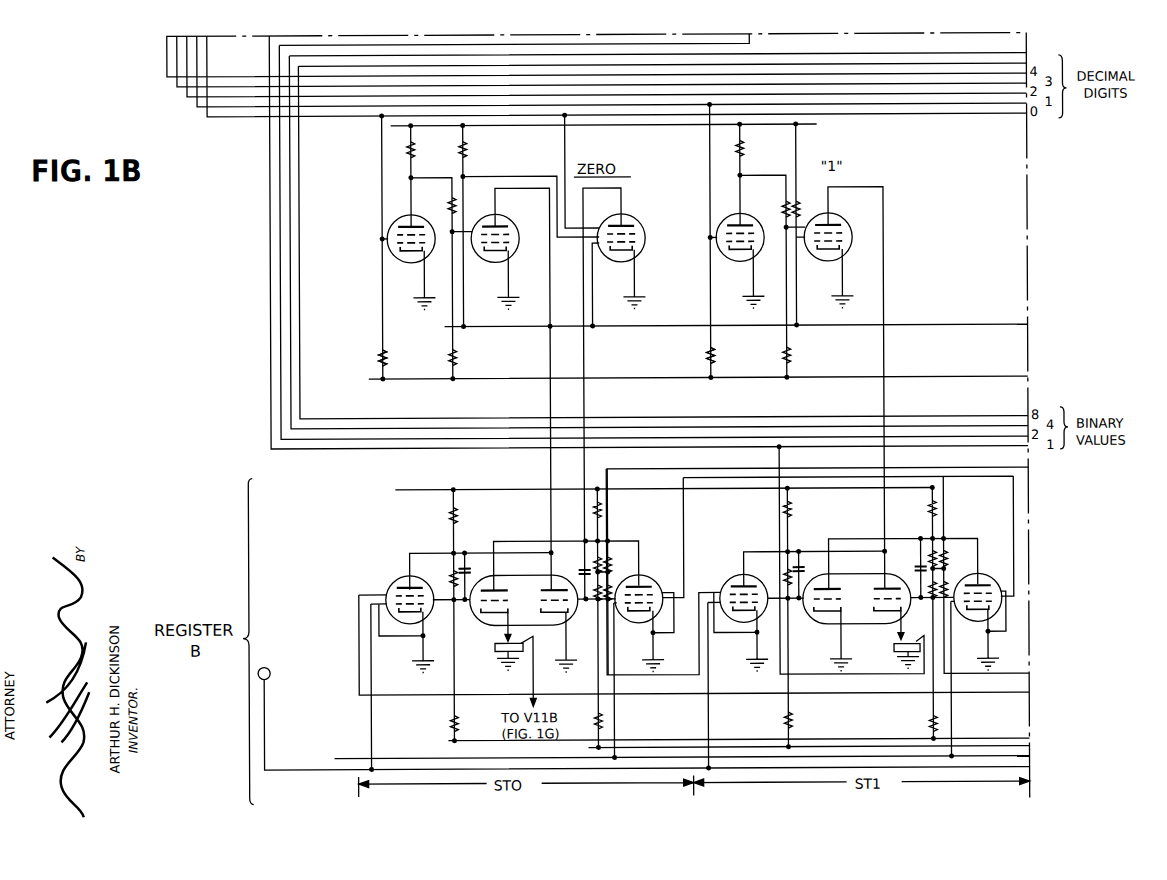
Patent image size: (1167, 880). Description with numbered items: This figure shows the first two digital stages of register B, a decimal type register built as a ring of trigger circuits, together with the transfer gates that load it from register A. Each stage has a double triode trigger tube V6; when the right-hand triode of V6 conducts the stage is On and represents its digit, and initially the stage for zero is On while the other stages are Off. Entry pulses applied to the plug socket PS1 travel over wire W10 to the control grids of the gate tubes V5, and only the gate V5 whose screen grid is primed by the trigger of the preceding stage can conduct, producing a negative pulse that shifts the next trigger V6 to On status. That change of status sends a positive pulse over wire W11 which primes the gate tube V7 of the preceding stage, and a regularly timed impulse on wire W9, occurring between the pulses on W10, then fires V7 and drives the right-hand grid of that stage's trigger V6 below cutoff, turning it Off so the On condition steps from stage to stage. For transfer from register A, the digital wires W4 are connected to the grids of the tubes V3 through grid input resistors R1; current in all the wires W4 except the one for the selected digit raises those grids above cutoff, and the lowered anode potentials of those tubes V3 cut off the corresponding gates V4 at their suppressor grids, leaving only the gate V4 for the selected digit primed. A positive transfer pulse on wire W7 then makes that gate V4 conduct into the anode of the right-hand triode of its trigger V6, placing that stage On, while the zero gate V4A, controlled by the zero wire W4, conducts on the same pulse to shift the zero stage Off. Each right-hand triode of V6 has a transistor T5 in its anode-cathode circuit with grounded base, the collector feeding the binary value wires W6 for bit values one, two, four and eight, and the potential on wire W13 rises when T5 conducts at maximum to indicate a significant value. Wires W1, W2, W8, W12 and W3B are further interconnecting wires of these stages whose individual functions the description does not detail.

The tube V3 is at (434, 222).
The gate V4 is at (524, 222).
The zero gate V4A is at (651, 222).
The grid input resistor R1 is at (378, 347).
The binary value wire W6 is at (908, 66).
The digital wire W4 is at (1000, 85).
The transfer pulse wire W7 is at (960, 327).
The wire W2 is at (648, 376).
The wire W1 is at (503, 470).
The wire W8 is at (665, 469).
The wire W11 is at (683, 536).
The wire W12 is at (435, 696).
The wire W13 is at (532, 674).
The wire W3B is at (1007, 747).
The timing pulse wire W9 is at (355, 764).
The entry pulse wire W10 is at (265, 712).
The plug socket PS1 is at (268, 666).
The gate tube V5 is at (394, 580).
The trigger tube V6 is at (524, 580).
The gate tube V7 is at (663, 572).
The transistor T5 is at (495, 646).